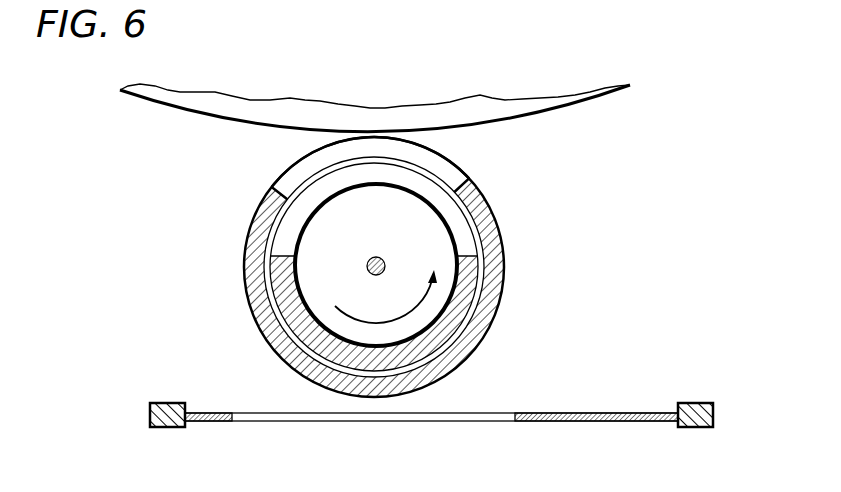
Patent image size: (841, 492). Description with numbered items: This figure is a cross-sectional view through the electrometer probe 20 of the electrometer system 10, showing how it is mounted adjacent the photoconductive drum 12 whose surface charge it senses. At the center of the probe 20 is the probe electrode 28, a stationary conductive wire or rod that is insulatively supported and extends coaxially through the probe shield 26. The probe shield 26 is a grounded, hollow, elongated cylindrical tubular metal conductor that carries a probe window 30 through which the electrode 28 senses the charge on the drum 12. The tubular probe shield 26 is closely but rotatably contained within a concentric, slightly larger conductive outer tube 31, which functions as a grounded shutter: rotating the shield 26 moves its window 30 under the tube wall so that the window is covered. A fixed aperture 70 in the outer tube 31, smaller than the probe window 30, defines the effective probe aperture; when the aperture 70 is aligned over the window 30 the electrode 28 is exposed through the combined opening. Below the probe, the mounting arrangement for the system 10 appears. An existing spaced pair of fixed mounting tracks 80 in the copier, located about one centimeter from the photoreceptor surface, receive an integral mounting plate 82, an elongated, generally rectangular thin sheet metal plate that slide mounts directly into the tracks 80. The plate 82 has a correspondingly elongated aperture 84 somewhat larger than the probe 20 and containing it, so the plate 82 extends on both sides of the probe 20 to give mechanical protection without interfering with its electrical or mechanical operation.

The electrometer system 10 is at (569, 310).
The photoconductive drum 12 is at (516, 119).
The electrometer probe 20 is at (240, 278).
The probe shield 26 is at (301, 279).
The probe electrode 28 is at (384, 261).
The probe window 30 is at (430, 197).
The outer tube 31 is at (253, 234).
The fixed aperture 70 is at (283, 168).
The mounting tracks 80 is at (157, 429).
The mounting plate 82 is at (537, 422).
The elongated aperture 84 is at (298, 425).